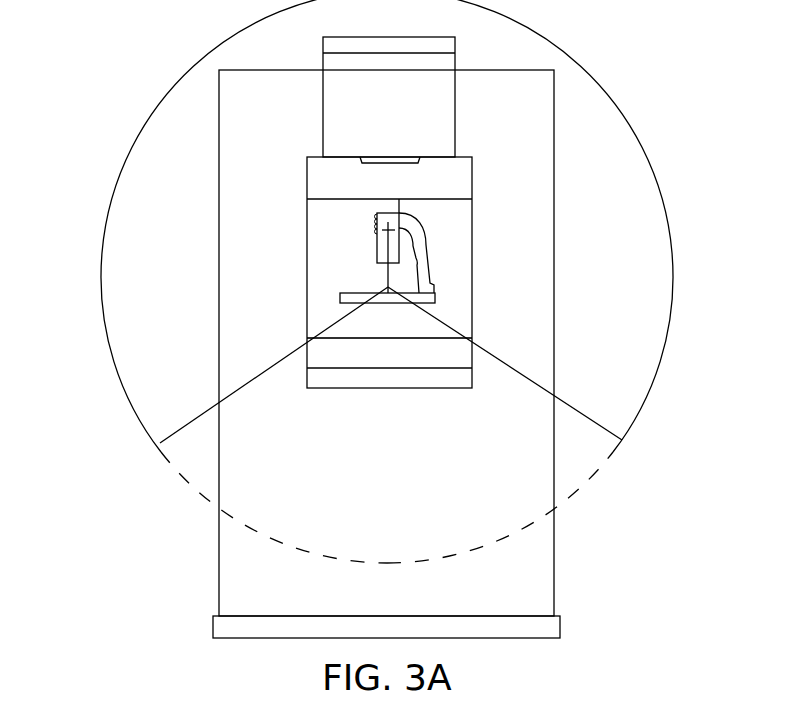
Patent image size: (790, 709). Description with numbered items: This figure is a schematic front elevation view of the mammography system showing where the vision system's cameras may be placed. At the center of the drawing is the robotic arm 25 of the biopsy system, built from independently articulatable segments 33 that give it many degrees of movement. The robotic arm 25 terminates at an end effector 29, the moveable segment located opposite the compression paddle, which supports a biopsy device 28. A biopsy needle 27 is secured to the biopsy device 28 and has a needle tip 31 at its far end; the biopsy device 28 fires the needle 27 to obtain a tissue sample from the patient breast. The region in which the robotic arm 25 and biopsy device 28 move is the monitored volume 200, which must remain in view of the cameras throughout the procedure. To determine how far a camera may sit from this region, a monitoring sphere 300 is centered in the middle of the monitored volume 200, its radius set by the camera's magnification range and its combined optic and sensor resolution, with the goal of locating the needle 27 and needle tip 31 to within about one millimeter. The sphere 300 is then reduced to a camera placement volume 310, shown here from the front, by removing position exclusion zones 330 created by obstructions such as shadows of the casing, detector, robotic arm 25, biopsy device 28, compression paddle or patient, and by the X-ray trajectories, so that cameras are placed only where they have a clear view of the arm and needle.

The robotic arm 25 is at (440, 227).
The monitored volume 200 is at (386, 247).
The end effector 29 is at (376, 214).
The biopsy device 28 is at (377, 234).
The biopsy needle 27 is at (382, 260).
The needle tip 31 is at (345, 296).
The segment 33 is at (415, 337).
The camera placement volume 310 is at (633, 393).
The monitoring sphere 300 is at (190, 462).
The position exclusion zone 330 is at (586, 460).